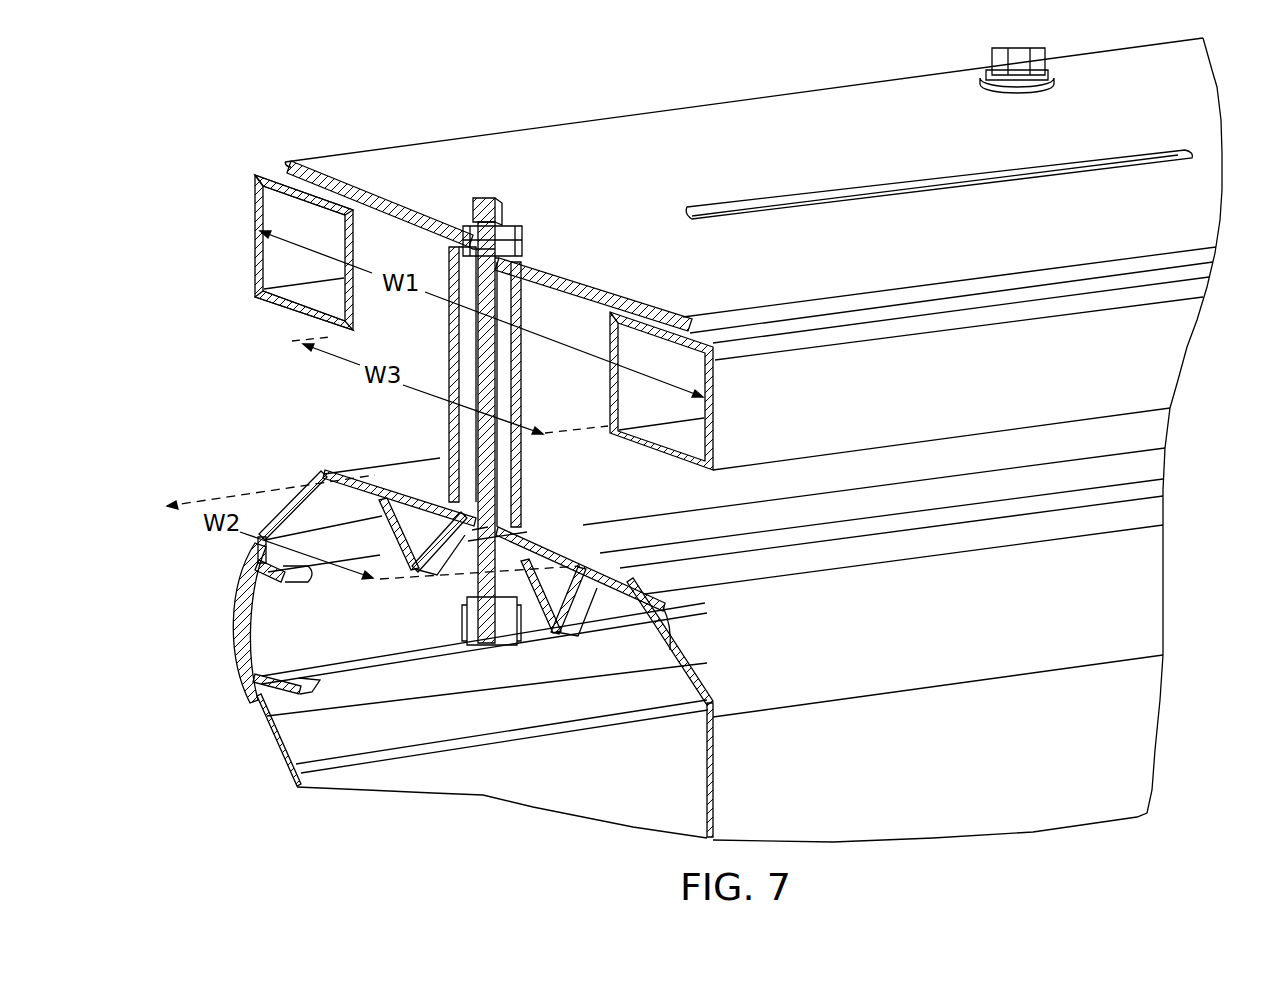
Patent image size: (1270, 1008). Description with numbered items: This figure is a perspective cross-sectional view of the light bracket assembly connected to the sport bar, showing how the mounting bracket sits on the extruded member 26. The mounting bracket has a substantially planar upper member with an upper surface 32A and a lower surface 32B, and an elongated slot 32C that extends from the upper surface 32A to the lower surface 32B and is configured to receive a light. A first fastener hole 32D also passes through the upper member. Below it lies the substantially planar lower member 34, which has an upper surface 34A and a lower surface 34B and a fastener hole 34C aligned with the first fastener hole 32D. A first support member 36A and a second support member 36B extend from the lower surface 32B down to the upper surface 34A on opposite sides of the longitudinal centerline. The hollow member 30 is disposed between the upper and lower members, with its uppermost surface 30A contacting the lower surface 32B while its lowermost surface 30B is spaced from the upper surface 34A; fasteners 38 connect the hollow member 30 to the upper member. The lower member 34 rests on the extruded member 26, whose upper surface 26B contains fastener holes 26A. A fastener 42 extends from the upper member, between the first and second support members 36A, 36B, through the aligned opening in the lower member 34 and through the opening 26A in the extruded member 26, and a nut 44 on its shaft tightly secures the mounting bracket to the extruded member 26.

The extruded member 26 is at (726, 677).
The fastener hole 26A is at (475, 547).
The upper surface 26B is at (917, 543).
The hollow member 30 is at (264, 239).
The uppermost surface 30A is at (268, 175).
The lowermost surface 30B is at (275, 307).
The upper surface 32A is at (632, 208).
The lower surface 32B is at (410, 248).
The elongated slot 32C is at (857, 181).
The first fastener hole 32D is at (524, 258).
The lower member 34 is at (751, 546).
The upper surface 34A is at (1137, 468).
The lower surface 34B is at (806, 543).
The fastener hole 34C is at (523, 530).
The first support member 36A is at (523, 459).
The second support member 36B is at (449, 424).
The fastener 38 is at (993, 48).
The fastener 42 is at (500, 205).
The nut 44 is at (508, 648).